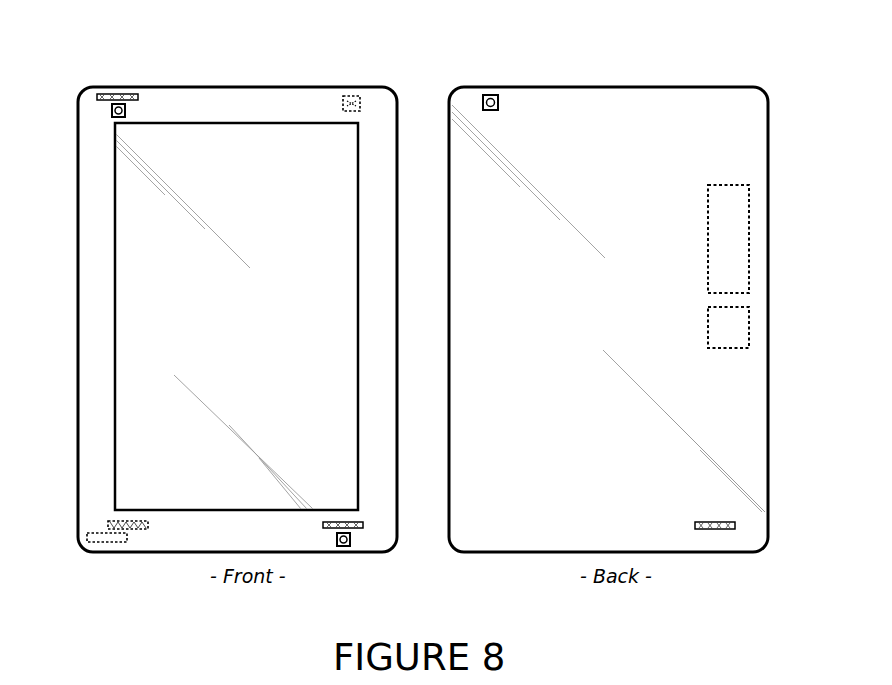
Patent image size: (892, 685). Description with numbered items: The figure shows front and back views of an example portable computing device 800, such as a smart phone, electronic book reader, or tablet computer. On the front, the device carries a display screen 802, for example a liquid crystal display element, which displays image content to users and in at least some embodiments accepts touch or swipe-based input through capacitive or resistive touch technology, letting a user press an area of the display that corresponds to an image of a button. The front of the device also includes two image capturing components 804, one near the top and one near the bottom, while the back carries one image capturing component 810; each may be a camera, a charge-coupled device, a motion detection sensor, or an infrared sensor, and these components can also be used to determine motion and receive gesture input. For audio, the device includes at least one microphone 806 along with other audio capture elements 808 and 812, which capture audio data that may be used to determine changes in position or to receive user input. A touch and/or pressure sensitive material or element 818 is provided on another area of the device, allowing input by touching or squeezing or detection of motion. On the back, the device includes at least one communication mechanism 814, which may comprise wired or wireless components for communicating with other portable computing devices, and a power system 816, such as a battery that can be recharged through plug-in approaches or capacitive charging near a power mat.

The portable computing device 800 is at (797, 95).
The display screen 802 is at (115, 235).
The image capturing components 804 is at (112, 110).
The microphone 806 is at (125, 93).
The audio capture element 808 is at (355, 528).
The image capturing component 810 is at (350, 97).
The audio capture element 812 is at (130, 529).
The communication mechanism 814 is at (748, 256).
The power system 816 is at (748, 332).
The touch and/or pressure sensitive material or element 818 is at (103, 543).